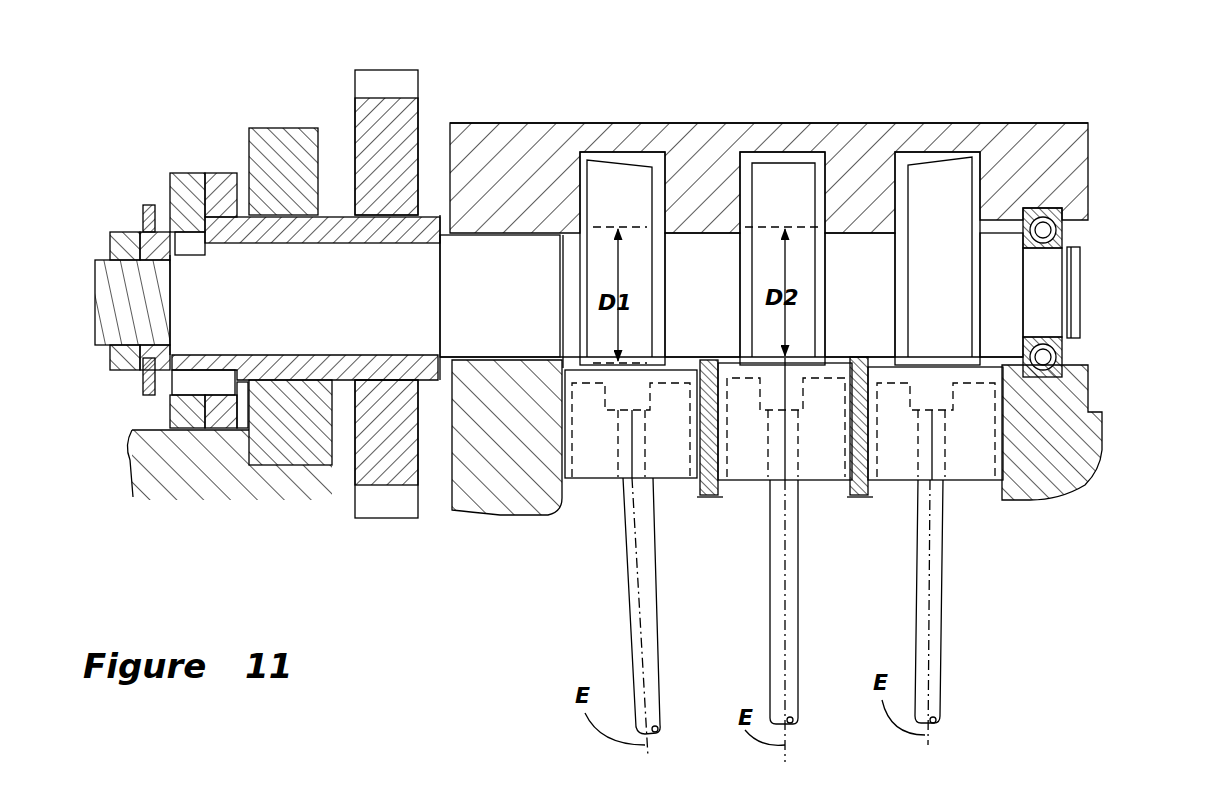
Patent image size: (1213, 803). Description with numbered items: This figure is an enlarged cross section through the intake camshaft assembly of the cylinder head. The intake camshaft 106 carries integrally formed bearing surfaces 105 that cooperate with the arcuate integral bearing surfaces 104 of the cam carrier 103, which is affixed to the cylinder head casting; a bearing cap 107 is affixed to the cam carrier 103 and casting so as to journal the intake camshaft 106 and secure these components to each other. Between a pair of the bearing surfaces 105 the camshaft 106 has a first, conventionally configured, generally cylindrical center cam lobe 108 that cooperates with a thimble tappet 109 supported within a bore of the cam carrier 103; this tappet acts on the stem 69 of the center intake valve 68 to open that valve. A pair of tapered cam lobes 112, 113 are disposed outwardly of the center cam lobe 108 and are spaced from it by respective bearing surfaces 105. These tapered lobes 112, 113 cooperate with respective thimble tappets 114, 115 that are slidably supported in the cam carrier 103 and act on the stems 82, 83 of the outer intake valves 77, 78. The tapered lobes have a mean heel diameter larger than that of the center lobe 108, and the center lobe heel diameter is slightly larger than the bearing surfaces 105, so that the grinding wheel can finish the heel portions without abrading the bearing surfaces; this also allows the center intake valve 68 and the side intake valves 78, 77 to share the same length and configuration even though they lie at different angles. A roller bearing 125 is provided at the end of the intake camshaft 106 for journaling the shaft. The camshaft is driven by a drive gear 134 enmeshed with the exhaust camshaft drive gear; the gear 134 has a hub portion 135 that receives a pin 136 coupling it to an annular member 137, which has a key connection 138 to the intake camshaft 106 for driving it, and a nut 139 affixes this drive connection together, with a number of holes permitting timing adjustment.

The drive gear 134 is at (350, 93).
The hub portion 135 is at (228, 172).
The annular member 137 is at (192, 172).
The key connection 138 is at (170, 173).
The nut 139 is at (123, 225).
The pin 136 is at (210, 383).
The bearing surfaces 105 is at (505, 247).
The bearing cap 107 is at (734, 115).
The tapered cam lobe 113 is at (617, 180).
The center cam lobe 108 is at (790, 183).
The tapered cam lobe 112 is at (947, 173).
The roller bearing 125 is at (1042, 210).
The intake camshaft 106 is at (1085, 283).
The cam carrier 103 is at (1087, 435).
The arcuate bearing surfaces 104 is at (482, 360).
The thimble tappet 115 is at (663, 460).
The thimble tappet 109 is at (823, 460).
The thimble tappet 114 is at (973, 470).
The stem portion 83 is at (657, 597).
The side intake valve 78 is at (662, 672).
The stem portion 69 is at (800, 582).
The center intake valve 68 is at (804, 685).
The stem portion 82 is at (943, 570).
The side intake valve 77 is at (944, 678).